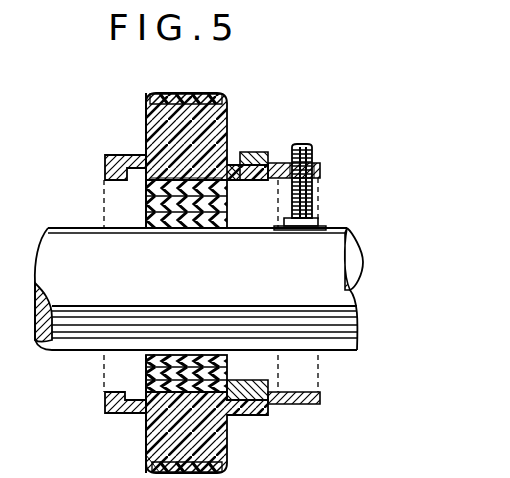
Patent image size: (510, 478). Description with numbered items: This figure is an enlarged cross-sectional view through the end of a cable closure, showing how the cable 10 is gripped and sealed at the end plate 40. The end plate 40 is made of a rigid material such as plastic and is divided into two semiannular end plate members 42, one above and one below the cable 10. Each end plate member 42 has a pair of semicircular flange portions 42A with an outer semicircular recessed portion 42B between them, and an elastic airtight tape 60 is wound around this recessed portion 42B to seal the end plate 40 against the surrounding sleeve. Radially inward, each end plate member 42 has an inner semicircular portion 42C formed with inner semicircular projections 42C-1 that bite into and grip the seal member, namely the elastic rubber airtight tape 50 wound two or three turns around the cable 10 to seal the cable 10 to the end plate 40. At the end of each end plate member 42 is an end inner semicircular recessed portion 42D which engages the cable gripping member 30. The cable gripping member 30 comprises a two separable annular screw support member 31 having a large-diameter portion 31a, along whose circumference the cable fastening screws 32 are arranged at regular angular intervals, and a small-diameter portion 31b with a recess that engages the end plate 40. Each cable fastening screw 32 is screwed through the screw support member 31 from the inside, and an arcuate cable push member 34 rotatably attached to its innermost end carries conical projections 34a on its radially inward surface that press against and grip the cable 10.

The cable 10 is at (332, 340).
The cable gripping member 30 is at (335, 193).
The two separable annular screw support member 31 is at (320, 166).
The large-diameter portion 31a is at (285, 163).
The small-diameter portion 31b is at (236, 164).
The cable fastening screw 32 is at (305, 146).
The arcuate cable push member 34 is at (318, 223).
The conical projections 34a is at (283, 231).
The end plate 40 is at (146, 130).
The semiannular end plate member 42 is at (145, 438).
The semicircular flange portions 42A is at (157, 473).
The outer semicircular recessed portion 42B is at (193, 462).
The inner semicircular portion 42C is at (145, 362).
The inner semicircular projections 42C-1 is at (167, 228).
The end inner semicircular recessed portion 42D is at (238, 378).
The airtight tape 50 is at (145, 198).
The airtight tape 60 is at (217, 94).